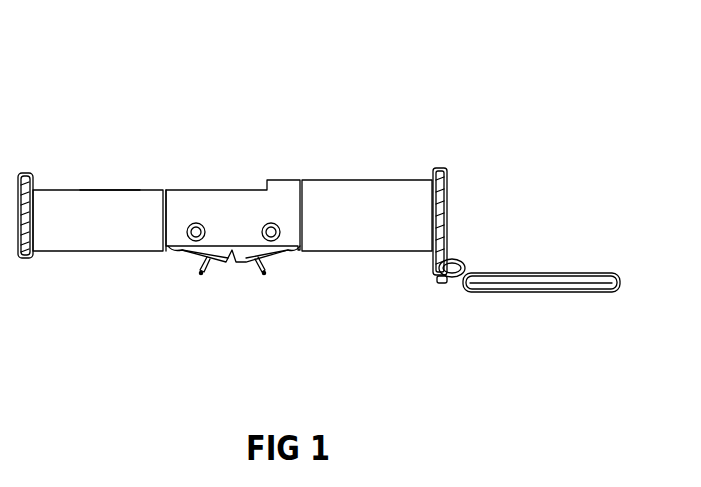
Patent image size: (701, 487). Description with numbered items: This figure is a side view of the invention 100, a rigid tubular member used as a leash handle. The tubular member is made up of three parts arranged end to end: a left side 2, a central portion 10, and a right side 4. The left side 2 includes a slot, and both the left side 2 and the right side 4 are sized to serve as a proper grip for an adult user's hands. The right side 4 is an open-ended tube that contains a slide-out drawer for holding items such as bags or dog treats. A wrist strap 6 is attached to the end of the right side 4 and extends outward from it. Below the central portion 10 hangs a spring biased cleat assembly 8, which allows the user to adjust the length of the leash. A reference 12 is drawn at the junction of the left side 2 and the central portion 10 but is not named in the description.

The invention 100 is at (424, 103).
The left side 2 is at (124, 233).
The right side 4 is at (362, 238).
The wrist strap 6 is at (510, 276).
The spring biased cleat assembly 8 is at (268, 302).
The central portion 10 is at (198, 205).
The joint 12 is at (107, 190).